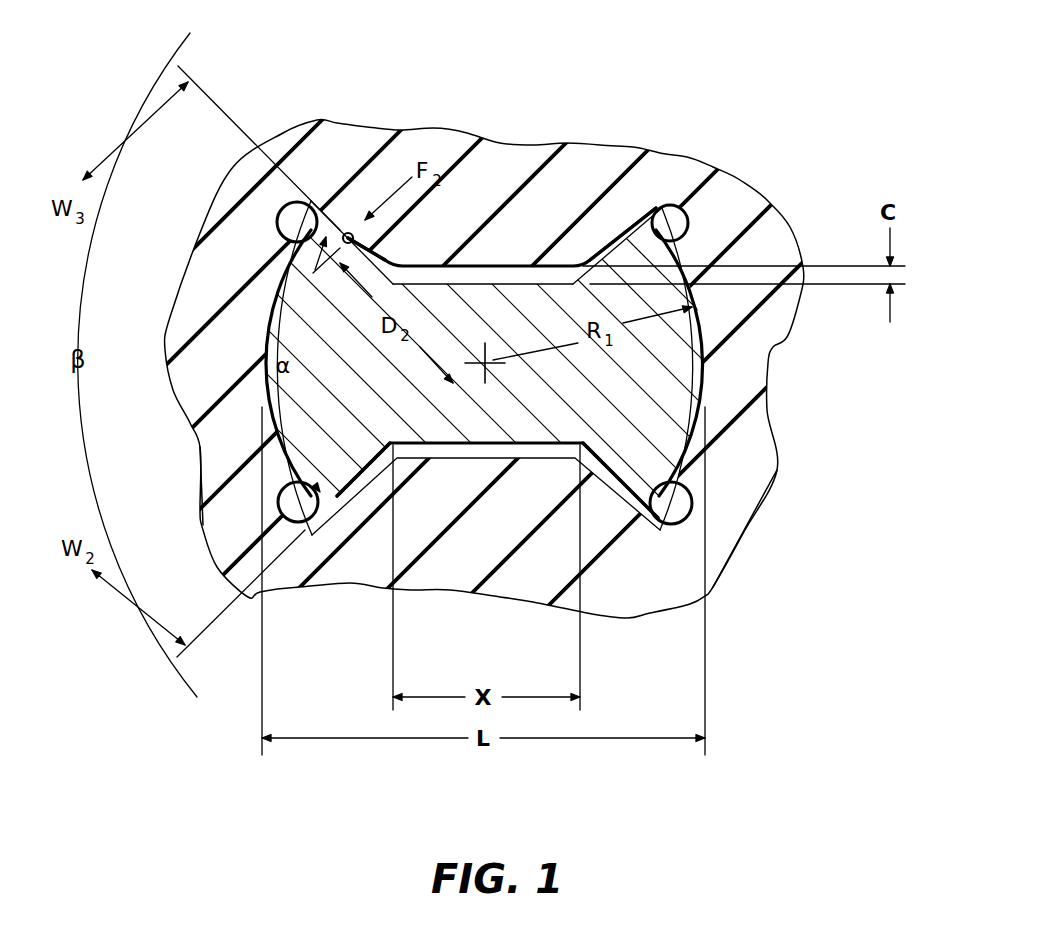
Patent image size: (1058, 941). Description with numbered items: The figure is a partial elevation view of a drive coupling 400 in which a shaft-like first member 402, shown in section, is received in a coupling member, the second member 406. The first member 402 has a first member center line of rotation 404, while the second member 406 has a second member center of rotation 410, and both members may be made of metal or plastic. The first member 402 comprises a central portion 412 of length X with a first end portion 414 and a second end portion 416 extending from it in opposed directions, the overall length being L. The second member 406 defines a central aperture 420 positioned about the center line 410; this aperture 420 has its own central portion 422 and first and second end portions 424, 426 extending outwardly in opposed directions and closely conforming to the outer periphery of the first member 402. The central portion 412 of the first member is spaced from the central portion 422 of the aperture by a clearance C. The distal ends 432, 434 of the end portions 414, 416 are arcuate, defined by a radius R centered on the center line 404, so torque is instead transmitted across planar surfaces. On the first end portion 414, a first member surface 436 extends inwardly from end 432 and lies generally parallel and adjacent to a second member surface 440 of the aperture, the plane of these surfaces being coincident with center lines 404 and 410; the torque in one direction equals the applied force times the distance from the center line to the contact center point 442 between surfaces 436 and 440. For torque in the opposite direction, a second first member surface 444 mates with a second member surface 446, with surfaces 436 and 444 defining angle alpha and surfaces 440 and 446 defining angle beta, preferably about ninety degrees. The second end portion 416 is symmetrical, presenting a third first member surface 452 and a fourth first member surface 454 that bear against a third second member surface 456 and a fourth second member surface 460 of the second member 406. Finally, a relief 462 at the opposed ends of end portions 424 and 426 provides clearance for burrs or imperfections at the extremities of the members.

The drive coupling 400 is at (731, 77).
The first member 402 is at (515, 282).
The first member center line of rotation 404 is at (495, 368).
The second member 406 is at (712, 152).
The second member center of rotation 410 is at (480, 356).
The central portion 412 is at (497, 540).
The first end portion 414 is at (211, 368).
The second end portion 416 is at (758, 369).
The central aperture 420 is at (561, 266).
The central portion 422 is at (486, 421).
The first end portion 424 is at (183, 479).
The second end portion 426 is at (761, 536).
The distal end 432 is at (240, 388).
The distal end 434 is at (708, 383).
The first member surface 436 is at (343, 236).
The second member surface 440 is at (316, 230).
The contact center point 442 is at (352, 232).
The second first member surface 444 is at (322, 490).
The second member surface 446 is at (342, 476).
The third first member surface 452 is at (624, 255).
The fourth first member surface 454 is at (638, 506).
The third second member surface 456 is at (688, 222).
The fourth second member surface 460 is at (676, 525).
The relief 462 is at (298, 220).